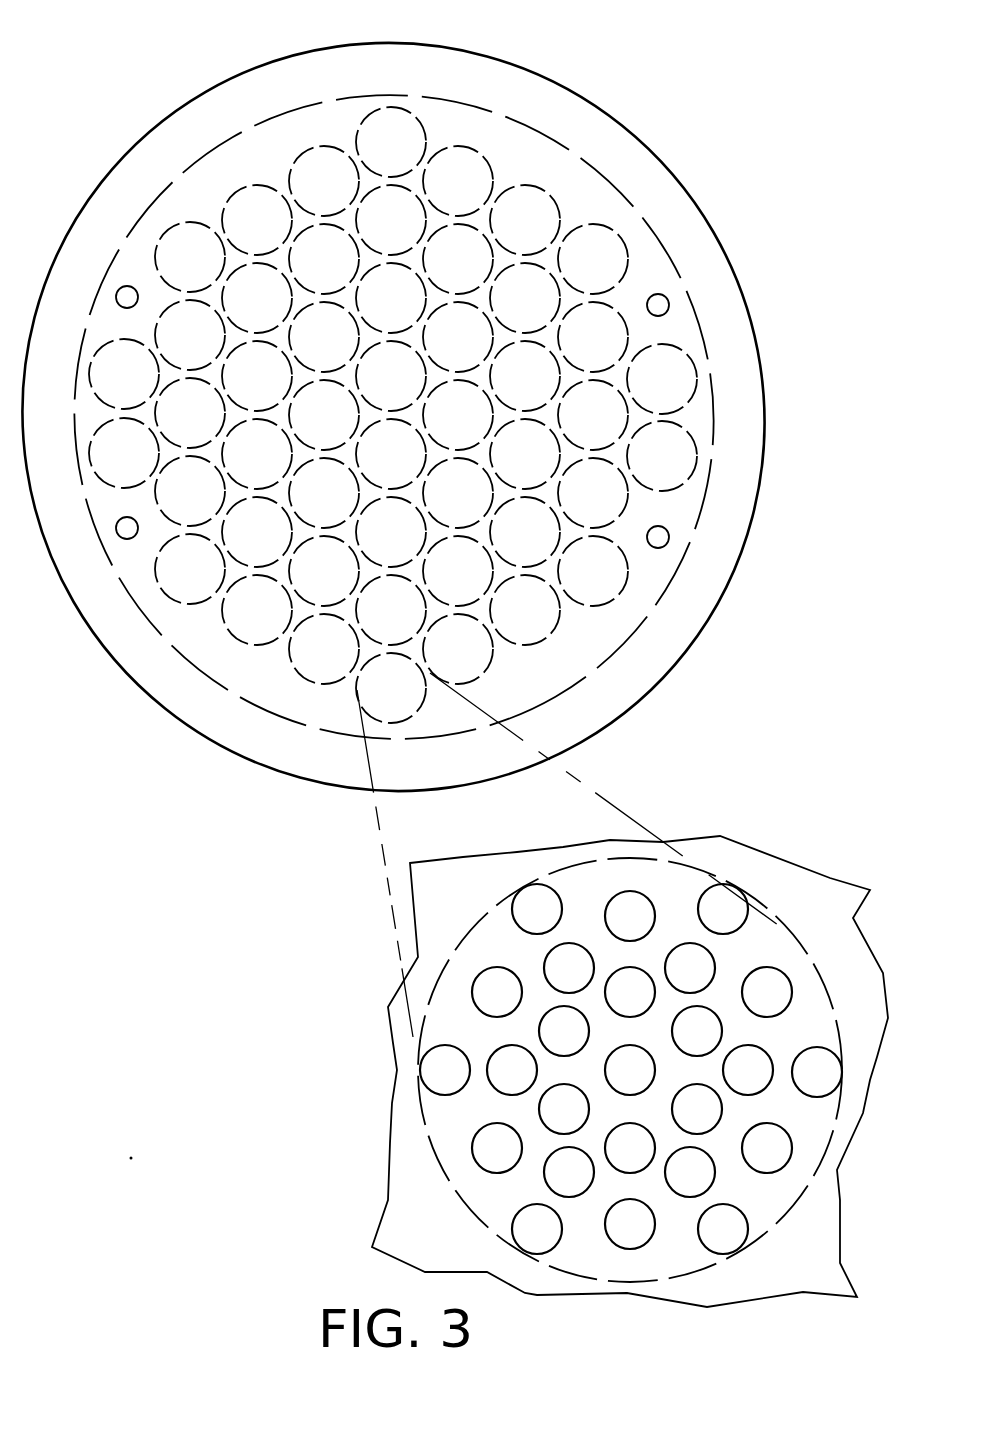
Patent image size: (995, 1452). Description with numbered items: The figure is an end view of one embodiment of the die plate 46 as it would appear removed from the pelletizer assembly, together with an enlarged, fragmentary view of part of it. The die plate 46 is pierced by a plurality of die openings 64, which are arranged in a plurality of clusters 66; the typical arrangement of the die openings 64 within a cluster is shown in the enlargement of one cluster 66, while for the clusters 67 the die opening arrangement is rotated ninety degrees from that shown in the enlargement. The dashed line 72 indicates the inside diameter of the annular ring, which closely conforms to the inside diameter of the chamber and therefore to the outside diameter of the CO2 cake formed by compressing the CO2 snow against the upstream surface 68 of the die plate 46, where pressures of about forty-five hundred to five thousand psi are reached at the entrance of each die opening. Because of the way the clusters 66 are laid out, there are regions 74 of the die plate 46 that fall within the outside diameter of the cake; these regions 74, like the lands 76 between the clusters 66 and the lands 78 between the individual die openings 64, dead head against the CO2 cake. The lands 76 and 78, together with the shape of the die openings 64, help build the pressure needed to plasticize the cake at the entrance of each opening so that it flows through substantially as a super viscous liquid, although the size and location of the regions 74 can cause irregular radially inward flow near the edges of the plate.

The die plate 46 is at (637, 168).
The die openings 64 is at (538, 900).
The clusters 66 is at (399, 110).
The clusters 67 is at (374, 318).
The upstream surface 68 is at (595, 706).
The dashed line 72 is at (698, 528).
The regions 74 is at (213, 168).
The lands 76 is at (617, 378).
The lands 78 is at (533, 1003).